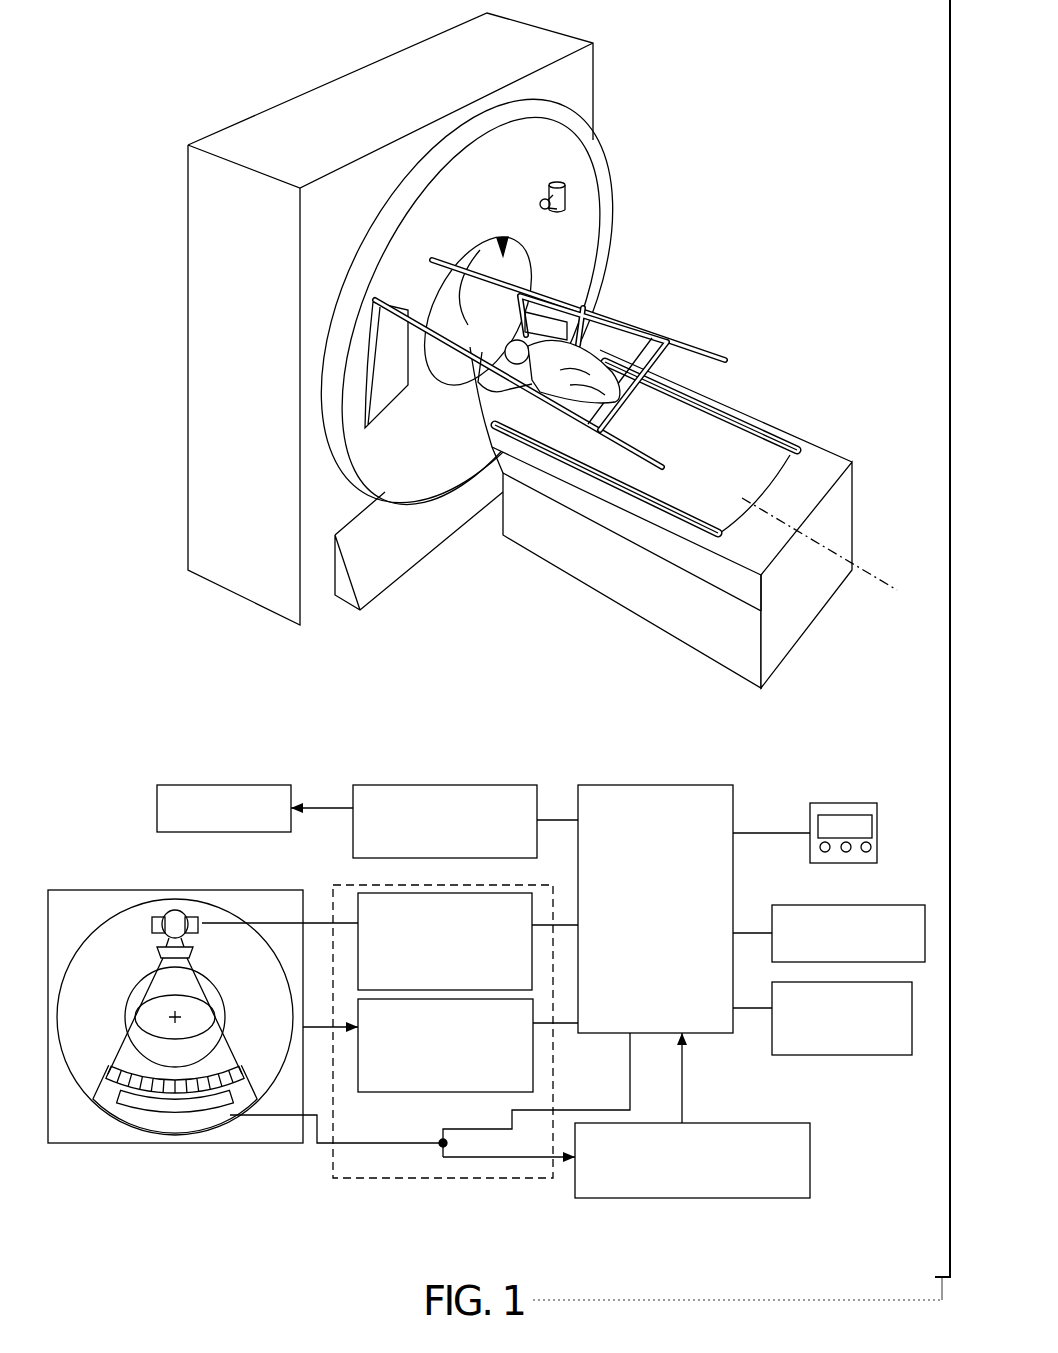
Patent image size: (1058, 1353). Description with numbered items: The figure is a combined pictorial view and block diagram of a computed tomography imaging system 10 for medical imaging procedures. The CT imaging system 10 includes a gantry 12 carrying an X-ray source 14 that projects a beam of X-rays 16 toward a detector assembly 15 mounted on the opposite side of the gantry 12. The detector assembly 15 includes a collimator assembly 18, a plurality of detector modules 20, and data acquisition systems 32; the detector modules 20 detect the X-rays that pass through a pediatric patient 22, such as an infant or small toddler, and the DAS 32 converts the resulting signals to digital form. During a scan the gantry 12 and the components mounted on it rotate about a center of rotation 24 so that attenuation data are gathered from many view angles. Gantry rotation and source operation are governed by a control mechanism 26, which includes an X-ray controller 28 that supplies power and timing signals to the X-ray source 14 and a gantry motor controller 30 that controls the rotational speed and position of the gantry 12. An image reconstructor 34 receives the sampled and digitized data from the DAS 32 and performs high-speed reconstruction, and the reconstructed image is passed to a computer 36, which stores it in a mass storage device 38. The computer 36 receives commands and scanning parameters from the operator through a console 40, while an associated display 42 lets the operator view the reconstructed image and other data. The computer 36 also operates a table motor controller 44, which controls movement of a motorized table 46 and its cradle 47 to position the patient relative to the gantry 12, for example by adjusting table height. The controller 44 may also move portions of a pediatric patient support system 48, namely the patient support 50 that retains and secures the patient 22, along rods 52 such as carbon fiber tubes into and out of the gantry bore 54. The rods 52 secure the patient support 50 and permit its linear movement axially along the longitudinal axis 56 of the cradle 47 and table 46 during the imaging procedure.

The CT imaging system 10 is at (782, 212).
The gantry 12 is at (554, 161).
The X-ray source 14 is at (568, 190).
The detector assembly 15 is at (380, 368).
The beam of X-rays 16 is at (122, 1063).
The collimator assembly 18 is at (237, 1068).
The detector modules 20 is at (192, 1097).
The patient 22 is at (582, 358).
The center of rotation 24 is at (182, 1014).
The control mechanism 26 is at (348, 1198).
The X-ray controller 28 is at (333, 890).
The gantry motor controller 30 is at (533, 1055).
The data acquisition systems 32 is at (138, 1112).
The image reconstructor 34 is at (692, 1198).
The computer 36 is at (655, 785).
The mass storage device 38 is at (843, 1055).
The console 40 is at (903, 905).
The display 42 is at (845, 803).
The table motor controller 44 is at (440, 785).
The motorized table 46 is at (608, 580).
The cradle 47 is at (773, 442).
The pediatric patient support system 48 is at (632, 427).
The patient support 50 is at (625, 332).
The rods 52 is at (470, 268).
The gantry opening or bore 54 is at (501, 235).
The longitudinal axis 56 is at (900, 580).